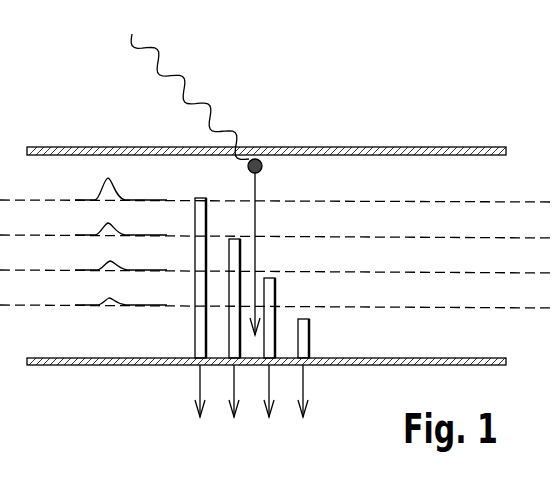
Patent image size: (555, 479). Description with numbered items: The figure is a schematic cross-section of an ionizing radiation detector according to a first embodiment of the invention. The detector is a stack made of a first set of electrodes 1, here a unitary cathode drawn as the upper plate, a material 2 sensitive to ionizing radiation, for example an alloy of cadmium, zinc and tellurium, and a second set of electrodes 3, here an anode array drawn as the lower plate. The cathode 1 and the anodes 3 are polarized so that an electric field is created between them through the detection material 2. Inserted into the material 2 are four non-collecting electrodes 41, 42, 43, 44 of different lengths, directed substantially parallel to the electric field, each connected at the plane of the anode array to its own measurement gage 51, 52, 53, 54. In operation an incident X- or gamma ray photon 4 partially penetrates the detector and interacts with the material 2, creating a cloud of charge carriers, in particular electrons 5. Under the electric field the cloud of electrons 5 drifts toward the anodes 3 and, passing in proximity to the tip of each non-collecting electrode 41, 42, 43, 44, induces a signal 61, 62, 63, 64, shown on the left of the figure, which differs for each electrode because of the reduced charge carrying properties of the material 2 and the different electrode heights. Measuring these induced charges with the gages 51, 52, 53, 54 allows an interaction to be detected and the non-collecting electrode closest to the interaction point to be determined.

The first set of electrodes 1 is at (413, 147).
The material sensitive to ionizing radiation 2 is at (483, 176).
The second set of electrodes 3 is at (470, 366).
The X- or gamma ray photon 4 is at (195, 77).
The cloud of charge carriers (electrons) 5 is at (256, 192).
The non-collecting electrode 41 is at (203, 198).
The non-collecting electrode 42 is at (237, 239).
The non-collecting electrode 43 is at (277, 296).
The non-collecting electrode 44 is at (309, 345).
The measurement gage 51 is at (200, 386).
The measurement gage 52 is at (234, 386).
The measurement gage 53 is at (269, 386).
The measurement gage 54 is at (304, 390).
The induced signal 61 is at (98, 198).
The induced signal 62 is at (97, 234).
The induced signal 63 is at (92, 270).
The induced signal 64 is at (94, 305).